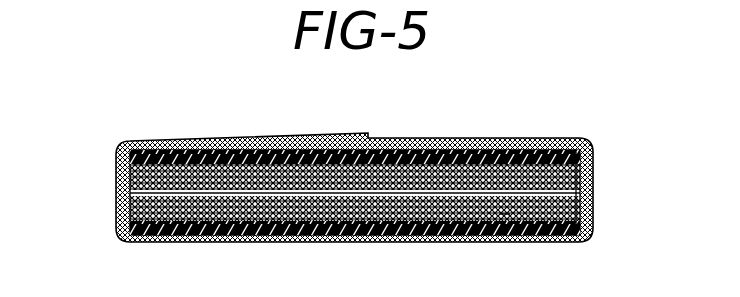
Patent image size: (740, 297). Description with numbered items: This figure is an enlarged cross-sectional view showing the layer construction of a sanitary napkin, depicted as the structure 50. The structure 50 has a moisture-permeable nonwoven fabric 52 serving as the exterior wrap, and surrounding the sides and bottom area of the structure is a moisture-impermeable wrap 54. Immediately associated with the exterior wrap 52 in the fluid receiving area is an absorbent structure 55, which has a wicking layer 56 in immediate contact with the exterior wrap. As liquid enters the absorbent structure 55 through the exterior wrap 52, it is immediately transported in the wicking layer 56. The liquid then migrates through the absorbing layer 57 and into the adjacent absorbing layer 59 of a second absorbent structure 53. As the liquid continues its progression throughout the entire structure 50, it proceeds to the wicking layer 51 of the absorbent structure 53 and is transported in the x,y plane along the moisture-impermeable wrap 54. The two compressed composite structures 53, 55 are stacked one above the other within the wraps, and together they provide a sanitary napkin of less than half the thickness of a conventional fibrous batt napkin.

The structure 50 is at (176, 110).
The wicking layer 51 is at (511, 160).
The moisture-permeable nonwoven fabric 52 is at (118, 236).
The absorbent structure 53 is at (588, 162).
The moisture-impermeable wrap 54 is at (116, 174).
The absorbent structure 55 is at (567, 203).
The wicking layer 56 is at (505, 220).
The absorbing layer 57 is at (307, 207).
The absorbing layer 59 is at (309, 182).